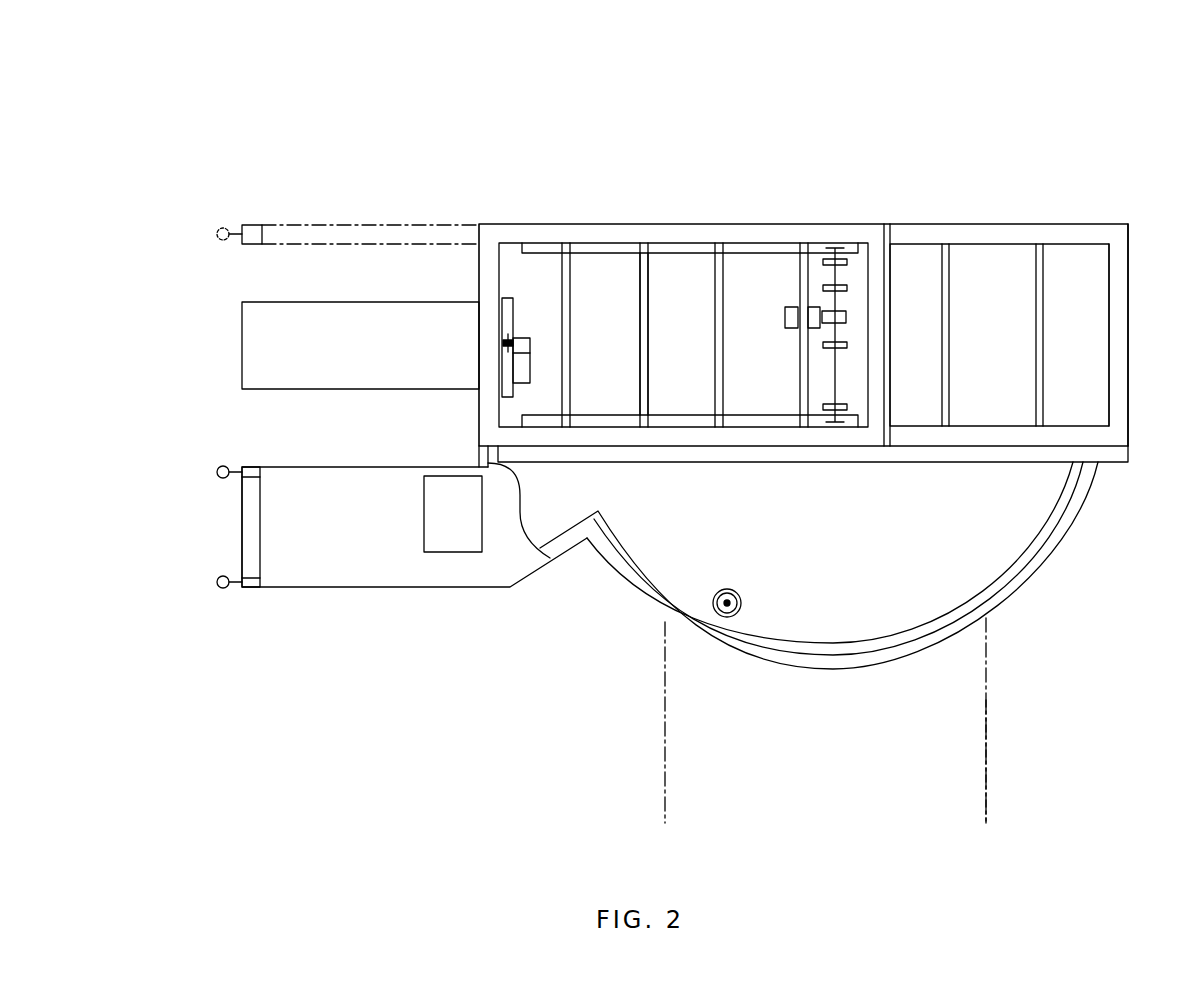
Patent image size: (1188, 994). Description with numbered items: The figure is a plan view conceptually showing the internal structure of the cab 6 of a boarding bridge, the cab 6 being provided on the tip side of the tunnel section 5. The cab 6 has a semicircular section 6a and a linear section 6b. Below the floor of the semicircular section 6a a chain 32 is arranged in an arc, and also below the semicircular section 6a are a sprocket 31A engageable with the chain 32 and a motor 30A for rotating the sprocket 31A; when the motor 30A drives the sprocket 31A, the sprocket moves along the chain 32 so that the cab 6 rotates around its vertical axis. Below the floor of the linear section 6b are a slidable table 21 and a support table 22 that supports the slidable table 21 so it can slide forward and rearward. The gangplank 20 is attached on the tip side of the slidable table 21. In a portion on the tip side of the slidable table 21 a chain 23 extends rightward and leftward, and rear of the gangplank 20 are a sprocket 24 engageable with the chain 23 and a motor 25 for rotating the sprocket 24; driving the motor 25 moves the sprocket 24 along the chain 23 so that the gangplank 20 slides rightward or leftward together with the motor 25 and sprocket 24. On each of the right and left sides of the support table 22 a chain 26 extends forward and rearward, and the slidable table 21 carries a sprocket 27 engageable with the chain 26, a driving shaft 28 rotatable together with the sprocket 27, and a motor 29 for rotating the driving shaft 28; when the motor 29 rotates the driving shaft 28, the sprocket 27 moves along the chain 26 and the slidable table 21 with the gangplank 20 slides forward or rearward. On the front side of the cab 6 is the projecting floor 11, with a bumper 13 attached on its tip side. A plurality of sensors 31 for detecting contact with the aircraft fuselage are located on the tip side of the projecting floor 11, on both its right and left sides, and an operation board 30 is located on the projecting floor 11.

The tunnel section 5 is at (986, 772).
The cab 6 is at (1024, 102).
The semicircular section 6a is at (1045, 563).
The linear section 6b is at (1078, 224).
The projecting floor 11 is at (348, 560).
The bumper 13 is at (250, 527).
The gangplank 20 is at (253, 341).
The slidable table 21 is at (748, 224).
The support table 22 is at (960, 224).
The chain 23 is at (513, 298).
The sprocket 24 is at (515, 340).
The motor 25 is at (531, 369).
The chain 26 is at (691, 268).
The sprocket 27 is at (838, 247).
The driving shaft 28 is at (843, 376).
The motor 29 is at (785, 316).
The operation board 30 is at (457, 553).
The motor 30A is at (713, 590).
The sensor 31 is at (222, 228).
The sprocket 31A is at (741, 590).
The chain 32 is at (360, 223).